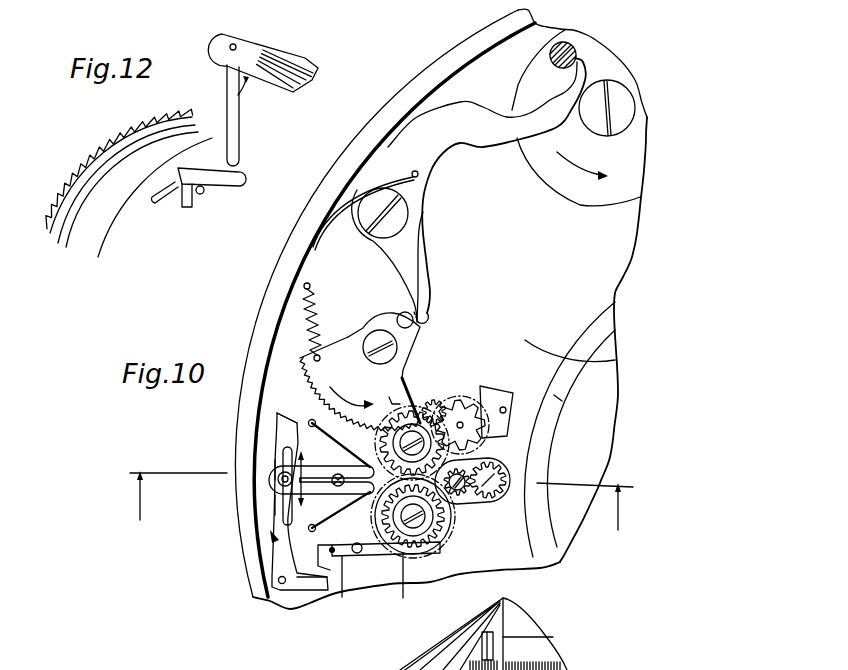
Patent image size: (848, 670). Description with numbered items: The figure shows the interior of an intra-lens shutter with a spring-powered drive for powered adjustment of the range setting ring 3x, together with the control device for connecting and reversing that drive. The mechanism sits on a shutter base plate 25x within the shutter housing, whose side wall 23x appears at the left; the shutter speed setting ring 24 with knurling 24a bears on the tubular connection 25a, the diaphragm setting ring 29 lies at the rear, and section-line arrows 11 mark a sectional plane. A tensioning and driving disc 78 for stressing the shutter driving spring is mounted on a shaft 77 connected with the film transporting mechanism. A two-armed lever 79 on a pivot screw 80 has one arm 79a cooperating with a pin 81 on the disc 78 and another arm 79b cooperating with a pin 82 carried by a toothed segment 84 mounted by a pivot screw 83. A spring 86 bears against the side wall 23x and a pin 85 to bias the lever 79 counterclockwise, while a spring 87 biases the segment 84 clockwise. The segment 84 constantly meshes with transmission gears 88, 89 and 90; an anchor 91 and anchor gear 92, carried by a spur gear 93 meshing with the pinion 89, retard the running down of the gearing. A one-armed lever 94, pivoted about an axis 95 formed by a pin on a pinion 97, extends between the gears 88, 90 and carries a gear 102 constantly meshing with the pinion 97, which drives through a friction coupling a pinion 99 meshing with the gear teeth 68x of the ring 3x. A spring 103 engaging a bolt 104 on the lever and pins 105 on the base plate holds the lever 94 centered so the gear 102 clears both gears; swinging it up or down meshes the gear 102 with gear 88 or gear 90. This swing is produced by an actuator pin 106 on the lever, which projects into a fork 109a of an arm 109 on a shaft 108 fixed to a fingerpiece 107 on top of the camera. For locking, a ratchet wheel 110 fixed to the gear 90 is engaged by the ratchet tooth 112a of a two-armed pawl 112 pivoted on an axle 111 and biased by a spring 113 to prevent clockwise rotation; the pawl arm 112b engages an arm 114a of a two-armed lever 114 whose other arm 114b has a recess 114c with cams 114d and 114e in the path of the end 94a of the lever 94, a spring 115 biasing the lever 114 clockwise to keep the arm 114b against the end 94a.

In FIG. 10, the range or distance setting ring 3x is at (489, 634).
In FIG. 10, the section line 11 is at (378, 517).
In FIG. 10, the side wall of the shutter housing 23x is at (440, 309).
In FIG. 12, the shutter speed setting ring 24 is at (119, 202).
In FIG. 12, the knurling 24a is at (118, 169).
In FIG. 10, the shutter base plate 25x is at (595, 429).
In FIG. 10, the tubular connection 25a is at (610, 400).
In FIG. 12, the diaphragm setting ring 29 is at (155, 206).
In FIG. 10, the gear teeth 68x is at (547, 663).
In FIG. 10, the shaft 77 is at (635, 108).
In FIG. 10, the tensioning and driving disc 78 is at (576, 137).
In FIG. 10, the two-armed lever 79 is at (487, 190).
In FIG. 10, the arm of lever 79 79a is at (580, 149).
In FIG. 10, the arm of lever 79 79b is at (449, 306).
In FIG. 10, the pivot screw 80 is at (405, 255).
In FIG. 10, the pin 81 is at (582, 39).
In FIG. 10, the pin 82 is at (389, 306).
In FIG. 10, the pivot screw 83 is at (360, 356).
In FIG. 10, the toothed segment 84 is at (343, 394).
In FIG. 10, the pin 85 is at (414, 160).
In FIG. 10, the spring 86 is at (357, 203).
In FIG. 10, the spring 87 is at (276, 322).
In FIG. 10, the transmission gear 88 is at (397, 400).
In FIG. 10, the transmission gear or pinion 89 is at (395, 443).
In FIG. 10, the transmission gear 90 is at (428, 519).
In FIG. 10, the anchor 91 is at (507, 405).
In FIG. 10, the anchor gear 92 is at (460, 403).
In FIG. 10, the spur gear 93 is at (435, 392).
In FIG. 10, the one-armed lever 94 is at (326, 475).
In FIG. 10, the end of lever 94 94a is at (237, 486).
In FIG. 10, the axis of rotation 95 is at (480, 475).
In FIG. 10, the pinion 97 is at (495, 495).
In FIG. 10, the pinion 99 is at (454, 644).
In FIG. 10, the gear 102 is at (470, 508).
In FIG. 10, the spring 103 is at (321, 477).
In FIG. 10, the bolt 104 is at (320, 497).
In FIG. 10, the pins 105 is at (303, 477).
In FIG. 12, the actuator pin 106 is at (219, 209).
In FIG. 12, the fingerpiece 107 is at (263, 61).
In FIG. 12, the shaft 108 is at (259, 115).
In FIG. 12, the arm 109 is at (211, 189).
In FIG. 12, the fork 109a is at (182, 220).
In FIG. 10, the ratchet wheel 110 is at (418, 528).
In FIG. 10, the axle 111 is at (367, 588).
In FIG. 10, the two-armed pawl 112 is at (379, 595).
In FIG. 10, the ratchet tooth 112a is at (422, 586).
In FIG. 10, the arm of pawl 112 112b is at (264, 611).
In FIG. 10, the spring 113 is at (334, 590).
In FIG. 10, the two-armed lever 114 is at (252, 506).
In FIG. 10, the arm of lever 114 114a is at (305, 623).
In FIG. 10, the arm of lever 114 114b is at (241, 412).
In FIG. 10, the recess 114c is at (223, 468).
In FIG. 10, the cam 114d is at (224, 512).
In FIG. 10, the cam 114e is at (233, 477).
In FIG. 10, the spring 115 is at (231, 551).